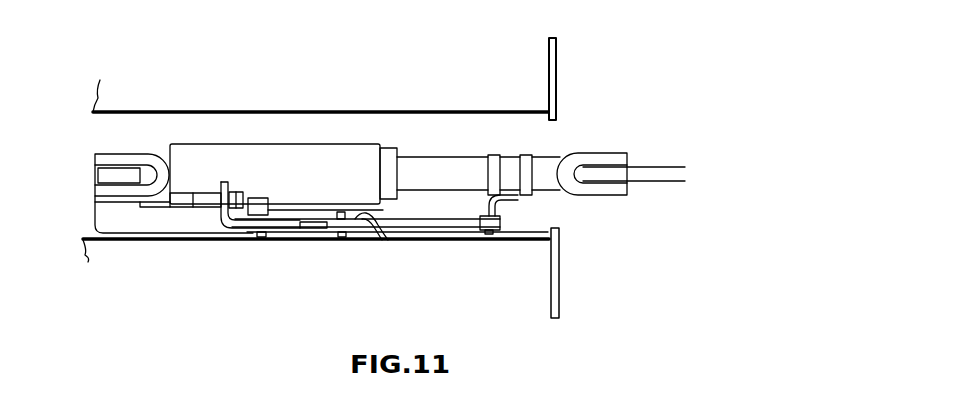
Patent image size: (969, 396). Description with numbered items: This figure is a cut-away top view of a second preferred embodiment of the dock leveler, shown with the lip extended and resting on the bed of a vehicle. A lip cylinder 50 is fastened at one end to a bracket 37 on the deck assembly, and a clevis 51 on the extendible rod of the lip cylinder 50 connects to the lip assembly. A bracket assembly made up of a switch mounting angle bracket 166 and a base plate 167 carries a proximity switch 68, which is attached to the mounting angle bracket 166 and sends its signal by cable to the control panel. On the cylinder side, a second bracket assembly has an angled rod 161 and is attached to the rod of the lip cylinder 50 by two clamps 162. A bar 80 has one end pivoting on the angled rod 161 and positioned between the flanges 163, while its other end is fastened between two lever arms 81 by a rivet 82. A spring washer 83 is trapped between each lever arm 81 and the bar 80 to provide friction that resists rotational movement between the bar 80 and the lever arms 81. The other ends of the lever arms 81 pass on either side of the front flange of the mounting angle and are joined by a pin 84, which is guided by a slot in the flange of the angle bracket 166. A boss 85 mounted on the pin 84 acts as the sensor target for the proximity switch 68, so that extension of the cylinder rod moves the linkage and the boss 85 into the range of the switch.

The bracket 37 is at (95, 173).
The base plate 167 is at (97, 208).
The lip cylinder 50 is at (326, 143).
The switch mounting angle bracket 166 is at (230, 180).
The proximity switch 68 is at (243, 193).
The boss 85 is at (268, 200).
The pin 84 is at (260, 238).
The bar 80 is at (458, 228).
The lever arms 81 is at (313, 232).
The rivet 82 is at (343, 237).
The spring washer 83 is at (368, 215).
The clamps 162 is at (530, 153).
The angled rod 161 is at (518, 200).
The flanges 163 is at (500, 218).
The clevis 51 is at (570, 150).